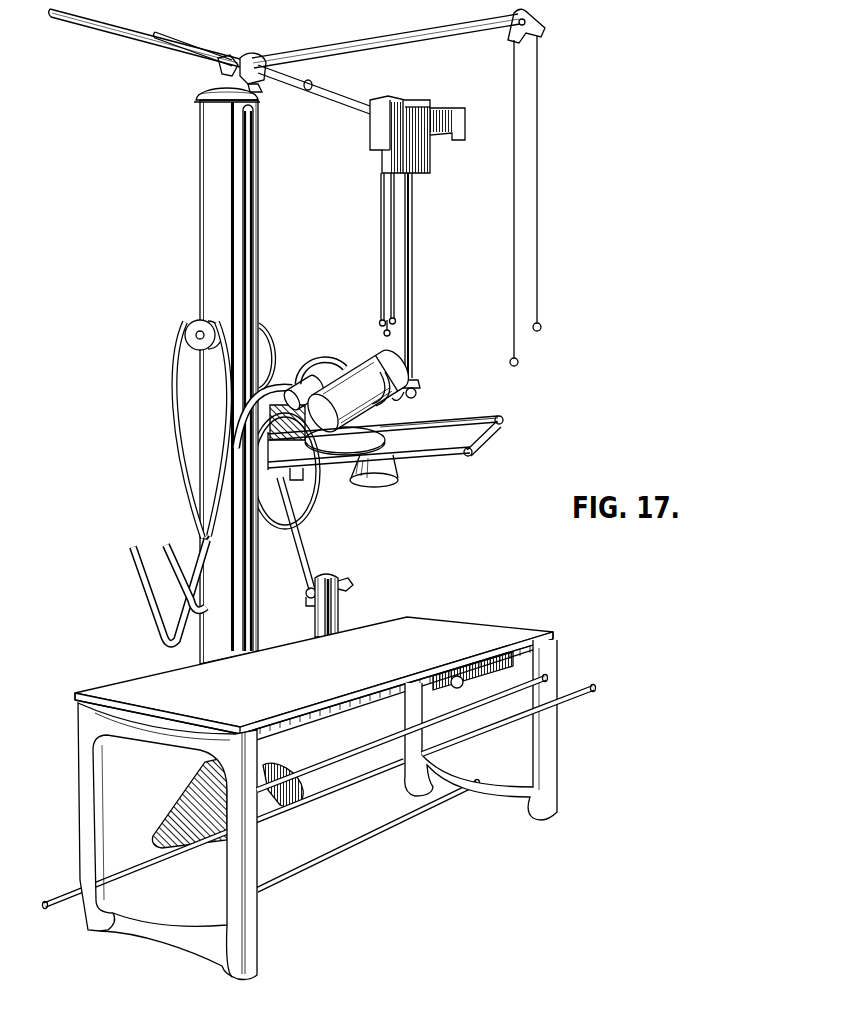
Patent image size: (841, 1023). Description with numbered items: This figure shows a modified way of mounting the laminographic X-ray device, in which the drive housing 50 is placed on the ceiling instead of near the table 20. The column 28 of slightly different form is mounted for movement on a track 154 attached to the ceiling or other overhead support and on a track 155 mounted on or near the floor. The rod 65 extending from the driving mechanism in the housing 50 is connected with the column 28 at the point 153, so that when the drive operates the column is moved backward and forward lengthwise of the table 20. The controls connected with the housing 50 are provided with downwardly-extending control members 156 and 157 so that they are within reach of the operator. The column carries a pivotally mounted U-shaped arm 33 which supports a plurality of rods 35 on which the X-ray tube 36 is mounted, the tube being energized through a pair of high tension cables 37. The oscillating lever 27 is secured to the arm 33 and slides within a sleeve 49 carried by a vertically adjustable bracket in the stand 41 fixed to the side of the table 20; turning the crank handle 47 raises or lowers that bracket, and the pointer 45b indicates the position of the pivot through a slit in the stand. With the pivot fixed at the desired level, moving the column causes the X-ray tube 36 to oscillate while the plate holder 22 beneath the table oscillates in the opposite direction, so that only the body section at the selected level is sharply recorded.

The track 154 is at (98, 32).
The point 153 is at (250, 62).
The rod 65 is at (333, 94).
The column 28 is at (200, 166).
The housing 50 is at (437, 162).
The control member 156 is at (380, 262).
The control member 157 is at (420, 384).
The X-ray tube 36 is at (350, 380).
The rods 35 is at (448, 422).
The high tension cables 37 is at (266, 331).
The U-shaped arm 33 is at (264, 478).
The oscillating lever 27 is at (303, 543).
The sleeve 49 is at (304, 598).
The stand 41 is at (313, 623).
The pointer 45b is at (334, 606).
The crank handle 47 is at (341, 578).
The plate holder 22 is at (483, 667).
The table 20 is at (78, 778).
The track 155 is at (58, 888).